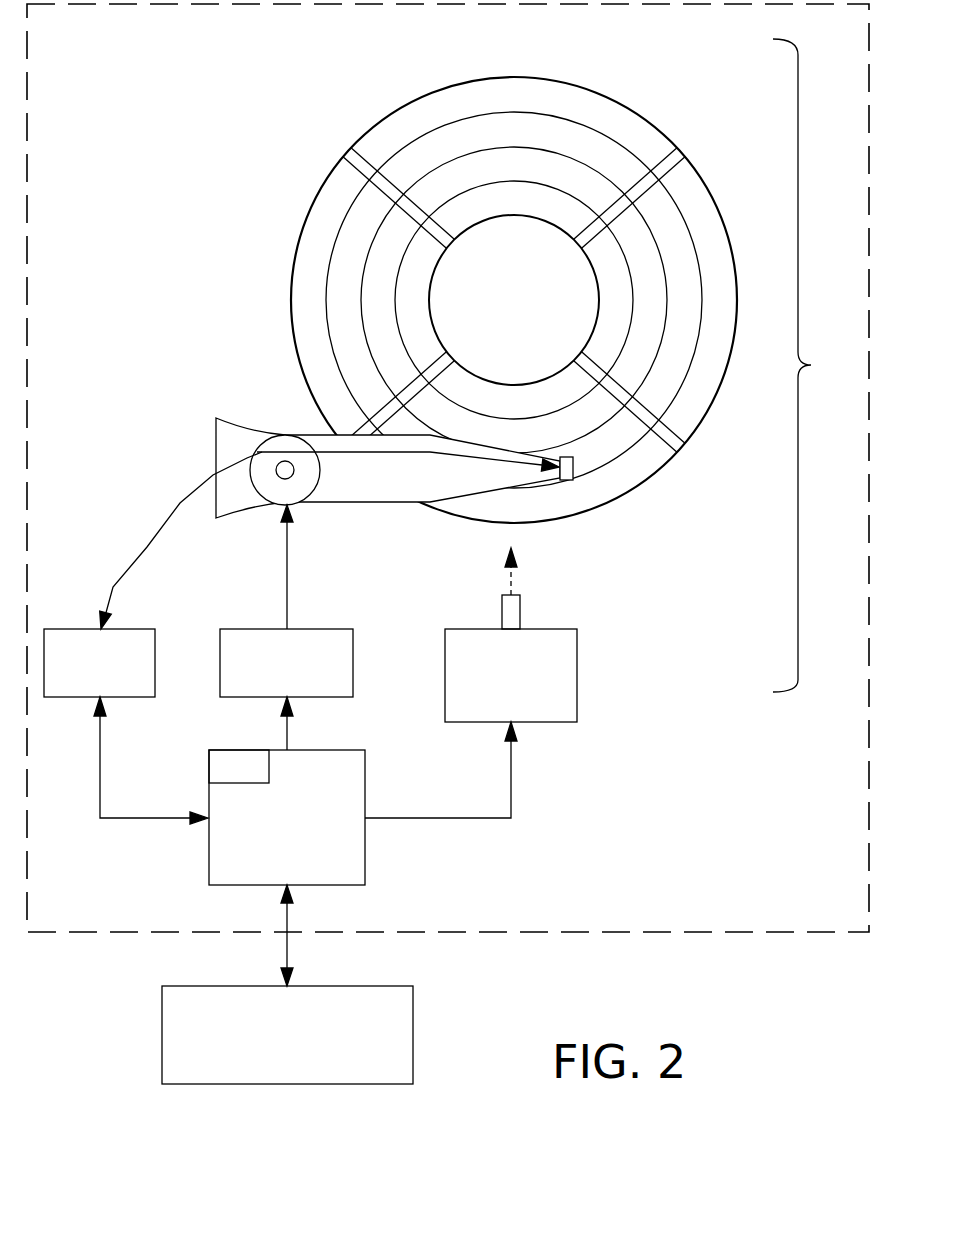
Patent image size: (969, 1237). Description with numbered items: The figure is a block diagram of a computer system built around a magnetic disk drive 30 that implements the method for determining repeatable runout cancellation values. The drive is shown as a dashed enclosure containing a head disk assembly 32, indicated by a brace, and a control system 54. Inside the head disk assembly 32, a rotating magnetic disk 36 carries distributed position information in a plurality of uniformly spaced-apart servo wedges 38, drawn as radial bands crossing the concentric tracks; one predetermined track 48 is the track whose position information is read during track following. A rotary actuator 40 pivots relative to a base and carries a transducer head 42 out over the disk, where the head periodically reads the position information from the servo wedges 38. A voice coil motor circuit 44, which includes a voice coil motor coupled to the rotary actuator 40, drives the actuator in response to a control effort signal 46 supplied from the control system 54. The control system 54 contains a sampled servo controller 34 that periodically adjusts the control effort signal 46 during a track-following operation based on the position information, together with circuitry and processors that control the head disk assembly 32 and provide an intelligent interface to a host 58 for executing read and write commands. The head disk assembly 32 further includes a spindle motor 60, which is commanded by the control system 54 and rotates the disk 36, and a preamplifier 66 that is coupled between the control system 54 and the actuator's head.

The magnetic disk drive 30 is at (748, 932).
The head disk assembly 32 is at (811, 365).
The sampled servo controller 34 is at (252, 780).
The magnetic disk 36 is at (395, 113).
The servo wedges 38 is at (353, 158).
The rotary actuator 40 is at (366, 483).
The transducer head 42 is at (566, 480).
The voice coil motor circuit 44 is at (273, 688).
The control effort signal 46 is at (288, 731).
The predetermined track 48 is at (332, 206).
The control system 54 is at (273, 871).
The host 58 is at (273, 1060).
The spindle motor 60 is at (497, 714).
The preamplifier 66 is at (86, 688).